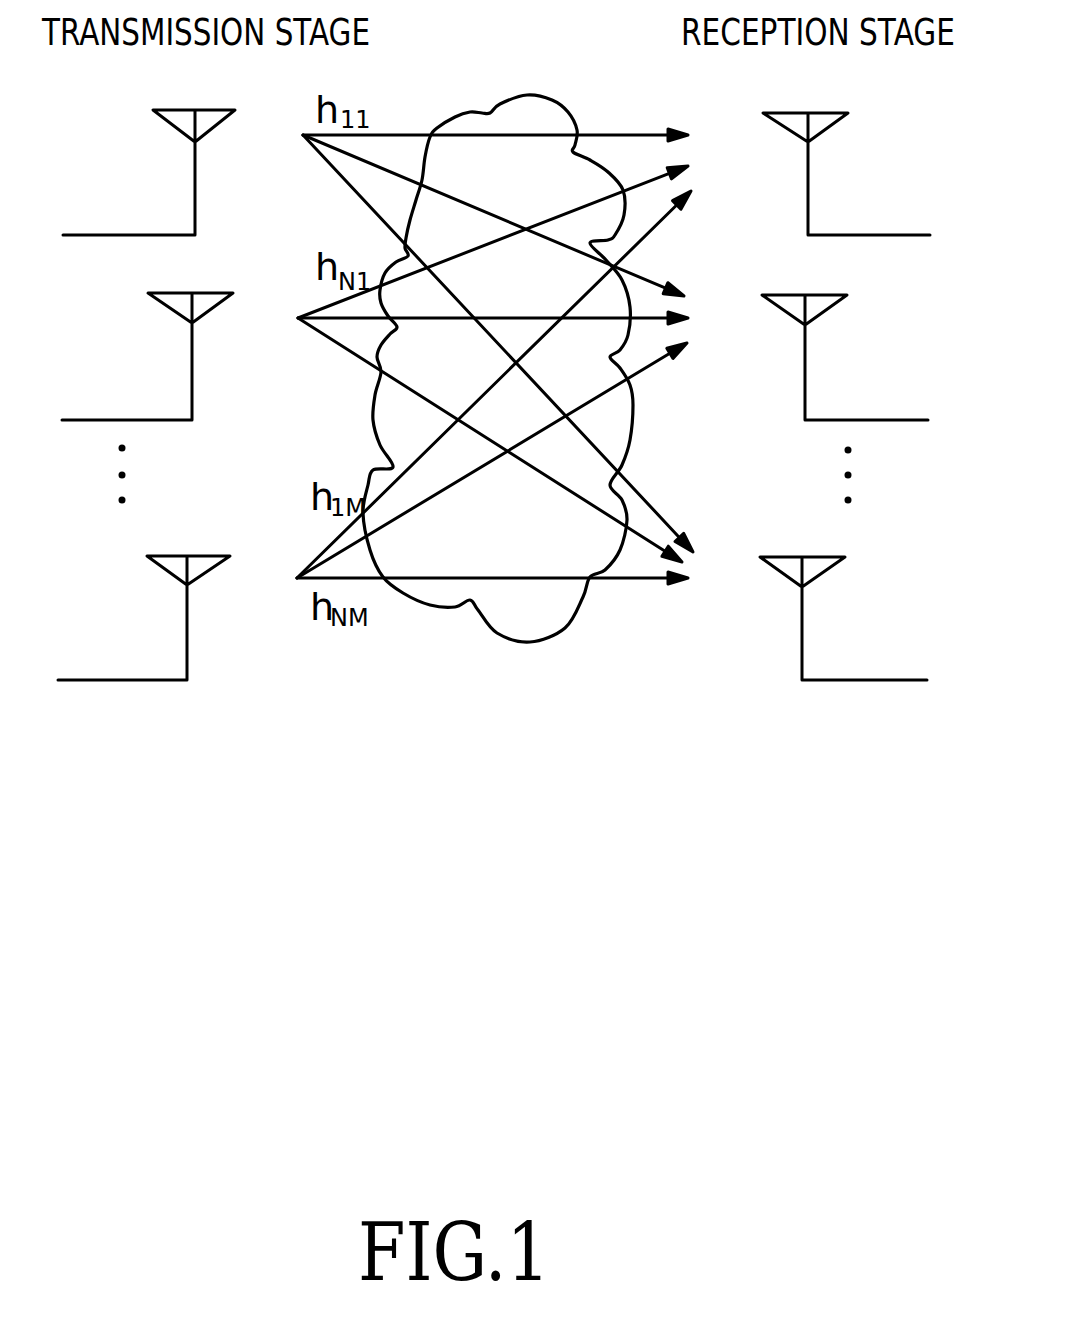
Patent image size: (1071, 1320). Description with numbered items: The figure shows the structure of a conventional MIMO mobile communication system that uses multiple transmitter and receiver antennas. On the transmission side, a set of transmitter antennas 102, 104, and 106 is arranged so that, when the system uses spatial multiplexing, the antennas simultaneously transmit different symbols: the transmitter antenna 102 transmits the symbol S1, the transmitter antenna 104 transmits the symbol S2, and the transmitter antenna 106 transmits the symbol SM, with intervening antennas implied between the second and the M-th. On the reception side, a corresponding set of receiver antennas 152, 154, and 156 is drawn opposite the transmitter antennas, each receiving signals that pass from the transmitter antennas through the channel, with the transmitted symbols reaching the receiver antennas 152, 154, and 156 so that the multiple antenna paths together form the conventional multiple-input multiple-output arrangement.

The transmitter antenna 102 is at (186, 110).
The transmitter antenna 104 is at (183, 293).
The transmitter antenna 106 is at (178, 556).
The first reception antenna 152 is at (815, 113).
The second reception antenna 154 is at (810, 295).
The N-th reception antenna 156 is at (805, 557).